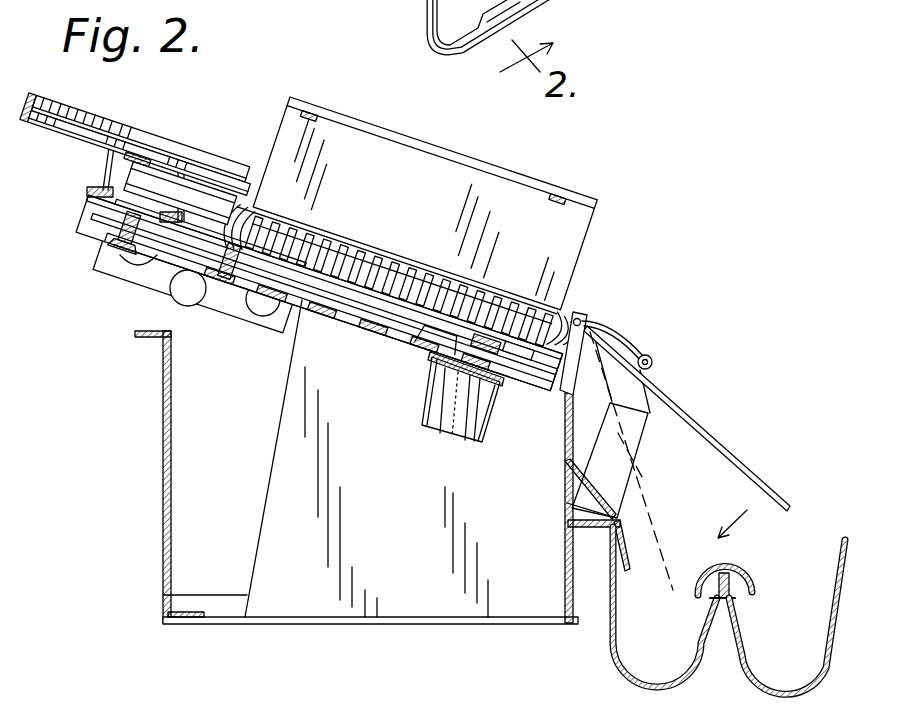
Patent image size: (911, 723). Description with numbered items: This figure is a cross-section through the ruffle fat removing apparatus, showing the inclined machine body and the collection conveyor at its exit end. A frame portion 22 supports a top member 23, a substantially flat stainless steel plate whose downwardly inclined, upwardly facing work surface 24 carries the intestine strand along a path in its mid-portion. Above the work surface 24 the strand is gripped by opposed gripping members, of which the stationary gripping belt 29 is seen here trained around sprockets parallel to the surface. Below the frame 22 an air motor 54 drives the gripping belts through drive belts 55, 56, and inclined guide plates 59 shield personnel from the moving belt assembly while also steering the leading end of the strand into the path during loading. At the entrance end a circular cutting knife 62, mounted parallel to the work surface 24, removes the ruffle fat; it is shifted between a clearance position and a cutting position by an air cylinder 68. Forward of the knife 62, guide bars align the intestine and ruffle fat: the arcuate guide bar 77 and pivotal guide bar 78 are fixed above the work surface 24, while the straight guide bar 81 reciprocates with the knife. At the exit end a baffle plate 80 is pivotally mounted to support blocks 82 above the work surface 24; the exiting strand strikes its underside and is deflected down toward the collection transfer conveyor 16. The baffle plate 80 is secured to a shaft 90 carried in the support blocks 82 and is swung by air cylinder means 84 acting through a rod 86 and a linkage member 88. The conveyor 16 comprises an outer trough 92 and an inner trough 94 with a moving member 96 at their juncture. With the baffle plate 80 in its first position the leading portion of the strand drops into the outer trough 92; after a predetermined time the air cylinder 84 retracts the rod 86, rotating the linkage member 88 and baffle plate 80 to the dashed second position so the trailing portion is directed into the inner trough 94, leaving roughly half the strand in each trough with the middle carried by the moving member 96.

The collection transfer conveyor 16 is at (848, 636).
The frame portion 22 is at (500, 593).
The top member 23 is at (362, 288).
The work surface 24 is at (412, 305).
The stationary gripping belt 29 is at (405, 268).
The air motor 54 is at (455, 420).
The drive belt 55 is at (435, 332).
The drive belt 56 is at (288, 305).
The inclined guide plates 59 is at (406, 196).
The circular cutting knife 62 is at (108, 212).
The air cylinder 68 is at (190, 306).
The arcuate guide bar 77 is at (40, 123).
The pivotal guide bar 78 is at (152, 138).
The baffle plate 80 is at (683, 423).
The straight guide bar 81 is at (222, 165).
The support blocks 82 is at (585, 317).
The air cylinder means 84 is at (637, 443).
The rod 86 is at (650, 373).
The linkage member 88 is at (620, 333).
The shaft 90 is at (585, 322).
The outer trough 92 is at (452, 33).
The inner trough 94 is at (646, 665).
The moving member 96 is at (729, 570).